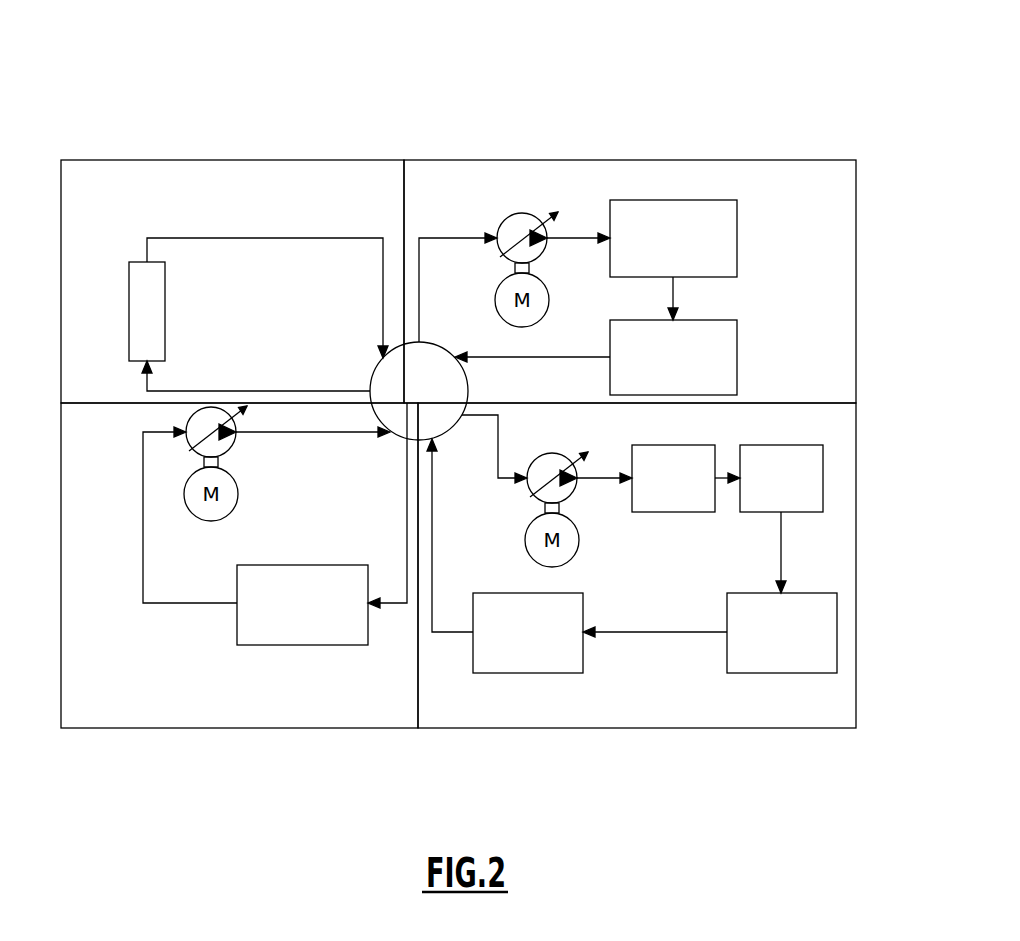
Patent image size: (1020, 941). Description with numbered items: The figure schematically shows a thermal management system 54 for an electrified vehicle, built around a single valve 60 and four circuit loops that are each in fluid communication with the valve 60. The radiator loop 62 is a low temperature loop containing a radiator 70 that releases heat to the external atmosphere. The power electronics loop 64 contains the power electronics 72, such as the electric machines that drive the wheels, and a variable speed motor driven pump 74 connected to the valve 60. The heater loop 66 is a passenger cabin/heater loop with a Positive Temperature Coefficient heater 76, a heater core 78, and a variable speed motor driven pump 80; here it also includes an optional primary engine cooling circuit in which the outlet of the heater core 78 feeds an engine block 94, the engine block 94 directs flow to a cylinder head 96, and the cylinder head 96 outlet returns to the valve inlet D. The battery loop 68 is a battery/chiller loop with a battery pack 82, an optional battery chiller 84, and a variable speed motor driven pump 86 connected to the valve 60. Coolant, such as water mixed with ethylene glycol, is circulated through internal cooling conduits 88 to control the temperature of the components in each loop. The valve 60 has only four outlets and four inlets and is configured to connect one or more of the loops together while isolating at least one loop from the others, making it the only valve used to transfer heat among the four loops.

The thermal management system 54 is at (784, 43).
The valve 60 is at (372, 372).
The radiator loop 62 is at (50, 261).
The power electronics loop 64 is at (50, 532).
The heater loop 66 is at (870, 567).
The battery loop 68 is at (868, 230).
The radiator 70 is at (129, 313).
The power electronics 72 is at (327, 565).
The variable speed motor driven pump 74 is at (250, 472).
The Positive Temperature Coefficient (PTC) heater 76 is at (672, 513).
The heater core 78 is at (823, 475).
The variable speed motor driven pump 80 is at (514, 522).
The battery pack 82 is at (720, 320).
The battery chiller 84 is at (720, 200).
The variable speed motor driven pump 86 is at (484, 283).
The internal cooling conduits 88 is at (278, 238).
The engine block 94 is at (727, 648).
The cylinder head 96 is at (583, 612).